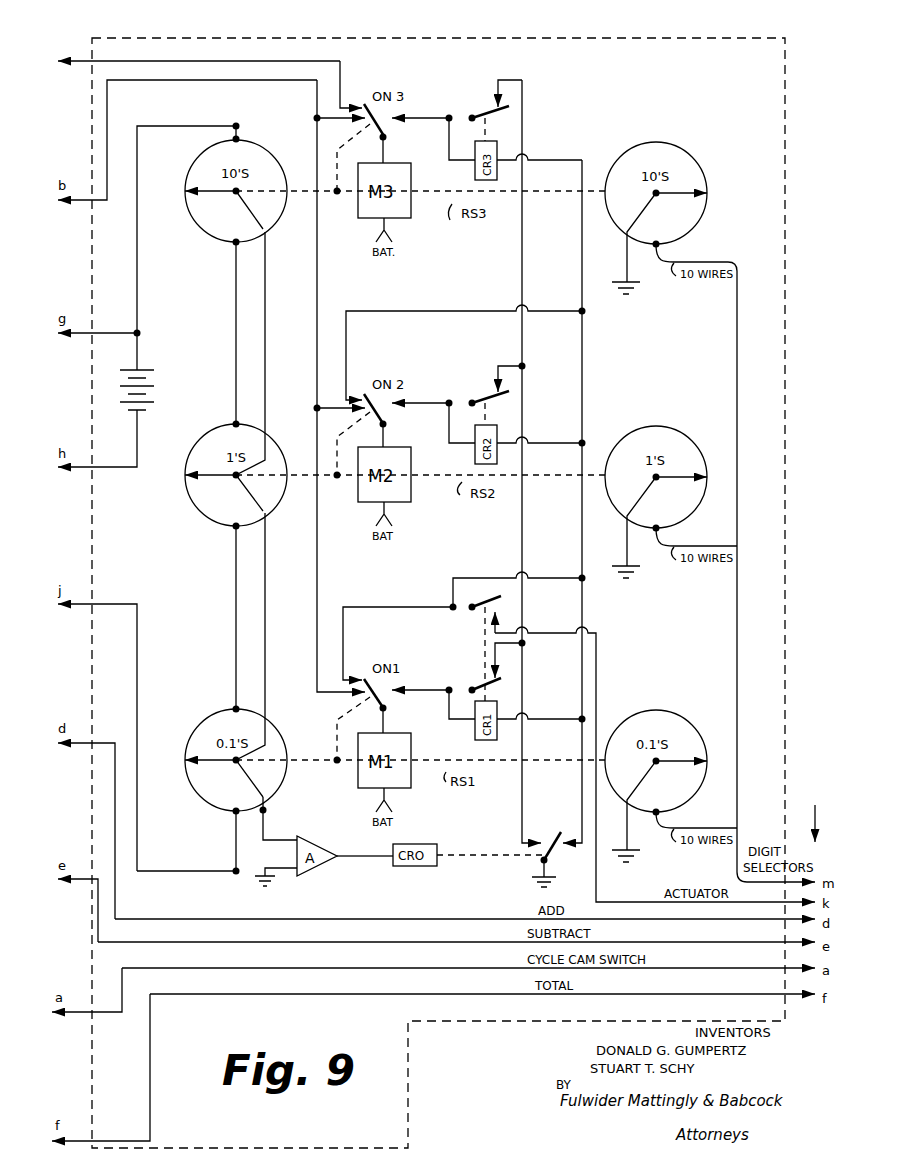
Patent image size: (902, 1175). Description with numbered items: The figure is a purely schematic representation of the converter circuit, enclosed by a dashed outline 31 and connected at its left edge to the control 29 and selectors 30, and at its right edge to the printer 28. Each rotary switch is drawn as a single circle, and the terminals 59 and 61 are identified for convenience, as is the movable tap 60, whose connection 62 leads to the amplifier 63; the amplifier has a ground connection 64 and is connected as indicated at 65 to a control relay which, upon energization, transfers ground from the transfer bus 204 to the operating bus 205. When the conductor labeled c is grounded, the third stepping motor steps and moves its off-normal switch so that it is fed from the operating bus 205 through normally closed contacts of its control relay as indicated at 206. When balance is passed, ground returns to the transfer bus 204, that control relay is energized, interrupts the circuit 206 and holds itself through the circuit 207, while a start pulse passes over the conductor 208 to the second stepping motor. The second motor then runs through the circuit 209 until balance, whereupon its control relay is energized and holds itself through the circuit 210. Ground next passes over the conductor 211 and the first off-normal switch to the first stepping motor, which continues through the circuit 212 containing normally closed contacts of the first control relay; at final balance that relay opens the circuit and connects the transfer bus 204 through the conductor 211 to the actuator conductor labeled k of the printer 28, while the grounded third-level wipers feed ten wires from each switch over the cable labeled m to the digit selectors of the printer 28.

The printer 28 is at (809, 666).
The control 29 is at (199, 49).
The selectors 30 is at (35, 425).
The circuit enclosure 31 is at (621, 41).
The terminal 59 is at (238, 128).
The movable tap 60 is at (267, 809).
The terminal 61 is at (236, 873).
The amplifier input conductor 62 is at (266, 833).
The amplifier 63 is at (338, 856).
The ground connection 64 is at (296, 878).
The connection to control relay CR0 65 is at (366, 858).
The transfer bus 204 is at (582, 395).
The operating bus 205 is at (522, 400).
The operating circuit for motor M3 206 is at (472, 115).
The self-holding circuit for relay CR3 207 is at (449, 156).
The conductor loop 208 is at (423, 311).
The operating circuit for motor M2 209 is at (472, 400).
The self-holding circuit for relay CR2 210 is at (447, 438).
The conductor 211 is at (532, 578).
The operating circuit for motor M1 212 is at (429, 690).